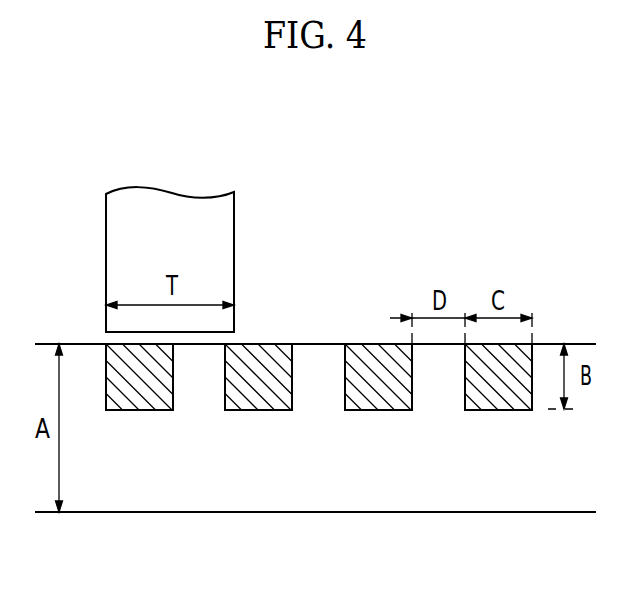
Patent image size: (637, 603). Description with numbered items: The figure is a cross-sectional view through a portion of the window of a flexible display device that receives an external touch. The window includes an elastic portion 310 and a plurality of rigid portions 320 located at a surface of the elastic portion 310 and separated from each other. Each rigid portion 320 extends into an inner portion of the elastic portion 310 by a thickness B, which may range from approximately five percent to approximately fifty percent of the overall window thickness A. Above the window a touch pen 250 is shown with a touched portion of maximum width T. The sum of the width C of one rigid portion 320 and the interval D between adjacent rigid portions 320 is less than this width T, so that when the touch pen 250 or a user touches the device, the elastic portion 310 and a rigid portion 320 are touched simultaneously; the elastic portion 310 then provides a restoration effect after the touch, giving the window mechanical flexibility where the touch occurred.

The touch pen 250 is at (220, 213).
The elastic portion 310 is at (355, 482).
The rigid portions 320 is at (261, 388).